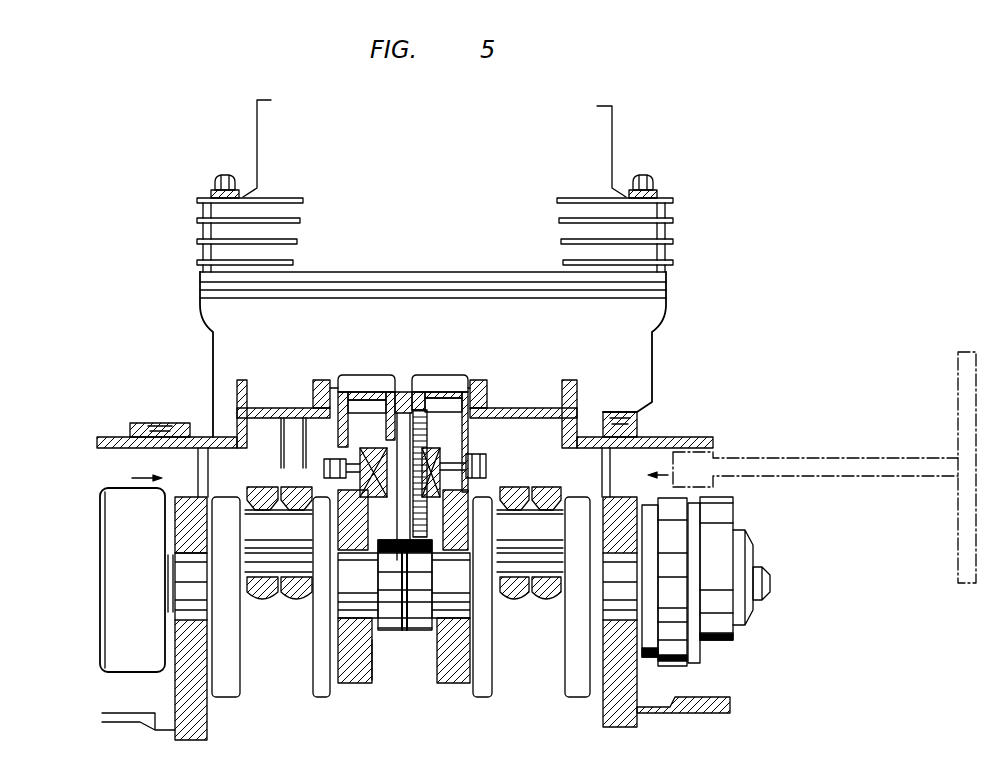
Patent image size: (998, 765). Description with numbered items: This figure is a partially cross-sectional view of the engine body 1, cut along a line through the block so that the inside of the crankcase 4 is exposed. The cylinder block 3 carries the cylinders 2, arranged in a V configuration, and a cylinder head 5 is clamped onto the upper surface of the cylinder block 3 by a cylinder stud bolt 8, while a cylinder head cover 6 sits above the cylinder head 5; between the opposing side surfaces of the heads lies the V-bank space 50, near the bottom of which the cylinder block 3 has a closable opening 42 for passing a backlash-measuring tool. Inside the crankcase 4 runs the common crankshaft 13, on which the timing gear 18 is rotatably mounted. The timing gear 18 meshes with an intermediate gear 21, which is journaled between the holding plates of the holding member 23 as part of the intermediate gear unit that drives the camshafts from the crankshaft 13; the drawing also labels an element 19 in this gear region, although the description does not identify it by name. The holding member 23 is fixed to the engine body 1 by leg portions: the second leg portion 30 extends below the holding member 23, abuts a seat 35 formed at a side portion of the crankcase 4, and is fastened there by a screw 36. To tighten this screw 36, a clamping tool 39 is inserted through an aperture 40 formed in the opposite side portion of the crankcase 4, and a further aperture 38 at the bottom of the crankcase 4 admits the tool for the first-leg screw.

The engine body 1 is at (188, 179).
The cylinder 2 is at (232, 345).
The cylinder block 3 is at (215, 395).
The crankcase 4 is at (352, 672).
The cylinder head 5 is at (207, 233).
The cylinder head cover 6 is at (273, 134).
The cylinder stud bolt 8 is at (226, 178).
The crankshaft 13 is at (293, 560).
The timing gear 18 is at (411, 632).
The balancer shaft 19 is at (391, 468).
The intermediate gear 21 is at (418, 395).
The holding member 23 is at (395, 553).
The second leg portion 30 is at (372, 458).
The seat 35 is at (392, 498).
The screw 36 is at (326, 467).
The aperture 38 is at (384, 665).
The clamping tool 39 is at (792, 458).
The aperture 40 is at (200, 468).
The closable opening 42 is at (353, 405).
The V-bank space 50 is at (399, 329).